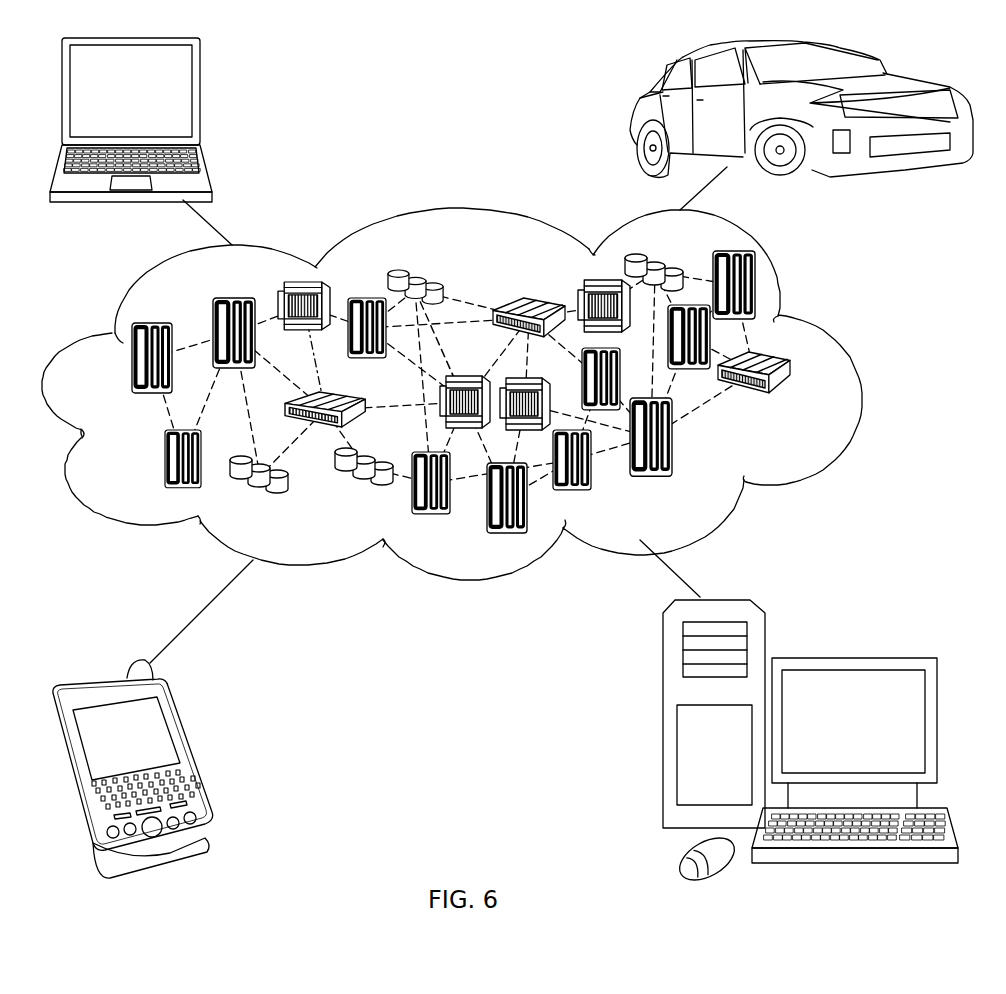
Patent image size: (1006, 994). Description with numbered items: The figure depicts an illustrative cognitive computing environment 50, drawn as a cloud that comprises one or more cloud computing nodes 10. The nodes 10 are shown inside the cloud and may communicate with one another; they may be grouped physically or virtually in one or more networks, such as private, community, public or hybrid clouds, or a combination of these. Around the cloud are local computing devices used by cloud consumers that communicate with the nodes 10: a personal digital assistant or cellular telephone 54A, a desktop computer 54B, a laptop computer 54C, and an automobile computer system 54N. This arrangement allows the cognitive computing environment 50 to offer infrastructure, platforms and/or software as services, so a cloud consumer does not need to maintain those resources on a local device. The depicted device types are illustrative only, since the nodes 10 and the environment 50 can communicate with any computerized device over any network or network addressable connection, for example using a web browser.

The cloud computing node 10 is at (795, 400).
The cognitive computing environment 50 is at (850, 367).
The personal digital assistant (PDA) or cellular telephone 54A is at (187, 750).
The desktop computer 54B is at (852, 657).
The laptop computer 54C is at (200, 100).
The automobile computer system 54N is at (633, 118).